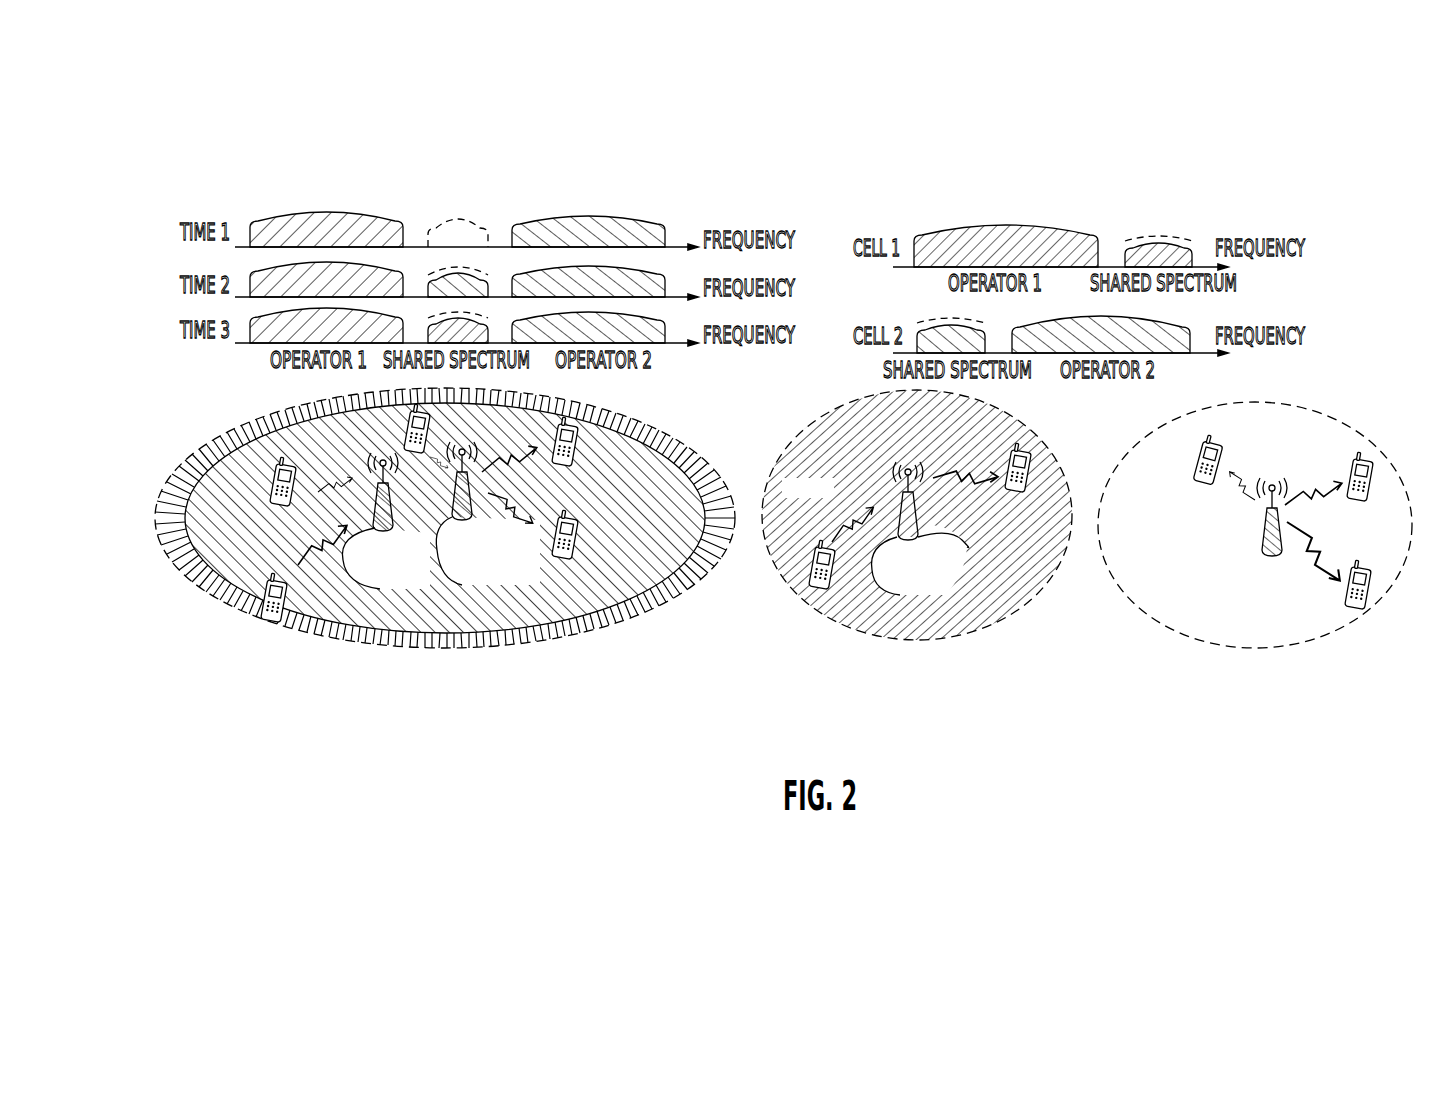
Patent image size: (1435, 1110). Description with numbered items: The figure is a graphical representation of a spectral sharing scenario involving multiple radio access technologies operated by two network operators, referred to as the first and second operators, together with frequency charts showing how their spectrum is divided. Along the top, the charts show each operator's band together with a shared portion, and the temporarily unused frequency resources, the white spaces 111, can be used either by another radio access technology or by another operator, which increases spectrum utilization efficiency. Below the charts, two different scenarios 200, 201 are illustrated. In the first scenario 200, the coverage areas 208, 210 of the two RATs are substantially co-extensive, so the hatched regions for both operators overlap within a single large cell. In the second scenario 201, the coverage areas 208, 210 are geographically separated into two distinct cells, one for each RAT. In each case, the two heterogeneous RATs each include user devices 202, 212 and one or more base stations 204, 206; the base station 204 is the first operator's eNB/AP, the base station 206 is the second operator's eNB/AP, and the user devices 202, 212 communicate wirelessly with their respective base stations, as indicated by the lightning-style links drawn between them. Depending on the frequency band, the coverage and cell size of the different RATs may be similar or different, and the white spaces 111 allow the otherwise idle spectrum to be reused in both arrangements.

The white spaces 111 is at (450, 232).
The scenario 200 is at (467, 765).
The scenario 201 is at (970, 615).
The user devices 202 is at (280, 620).
The base stations 204 is at (343, 560).
The base stations 206 is at (462, 520).
The coverage area 208 is at (1010, 587).
The coverage area 210 is at (1183, 588).
The user devices 212 is at (568, 560).